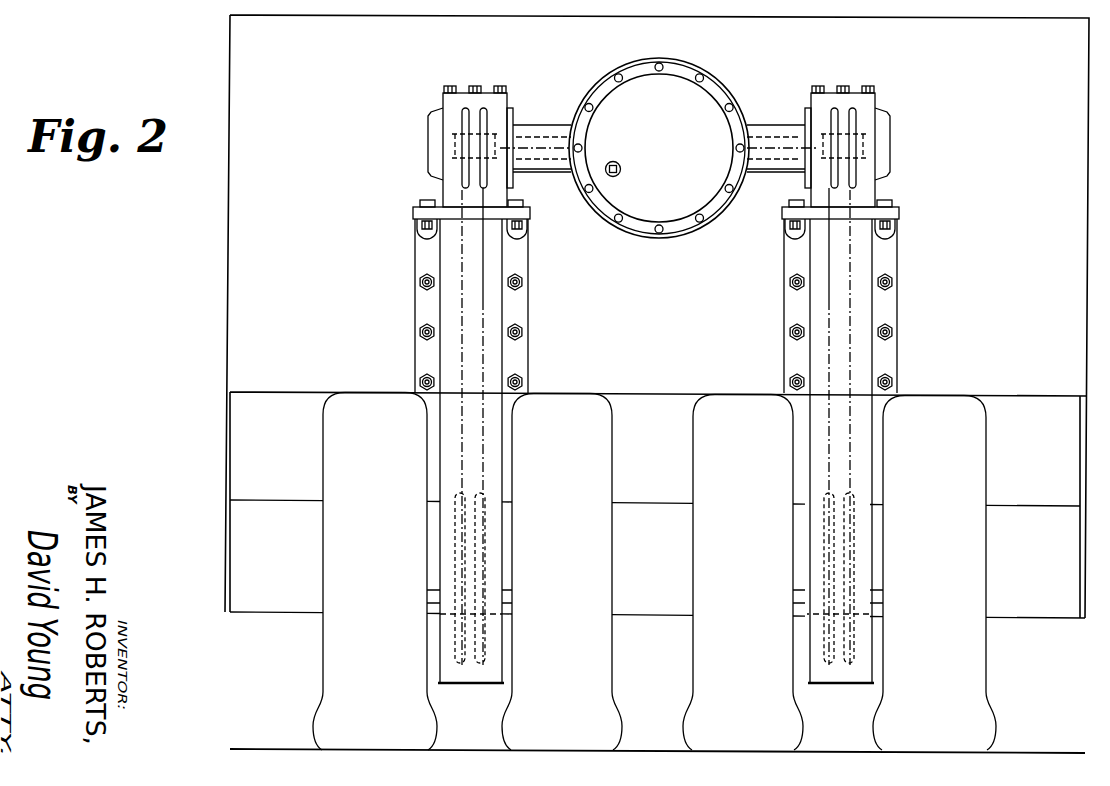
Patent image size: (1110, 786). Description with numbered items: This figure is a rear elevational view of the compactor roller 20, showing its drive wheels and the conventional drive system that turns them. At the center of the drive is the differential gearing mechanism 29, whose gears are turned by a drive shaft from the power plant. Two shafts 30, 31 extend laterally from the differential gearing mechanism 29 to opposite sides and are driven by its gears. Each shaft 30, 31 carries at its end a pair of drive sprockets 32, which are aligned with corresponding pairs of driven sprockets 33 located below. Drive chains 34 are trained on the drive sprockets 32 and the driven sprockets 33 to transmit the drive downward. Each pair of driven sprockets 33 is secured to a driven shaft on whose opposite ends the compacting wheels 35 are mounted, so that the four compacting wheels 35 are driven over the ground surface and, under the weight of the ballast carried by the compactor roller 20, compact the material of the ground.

The compactor roller 20 is at (224, 50).
The differential gearing mechanism 29 is at (665, 100).
The shaft 30 is at (520, 135).
The shaft 31 is at (790, 135).
The drive sprockets 32 is at (478, 106).
The driven sprockets 33 is at (457, 497).
The drive chains 34 is at (462, 271).
The compacting wheels 35 is at (378, 405).